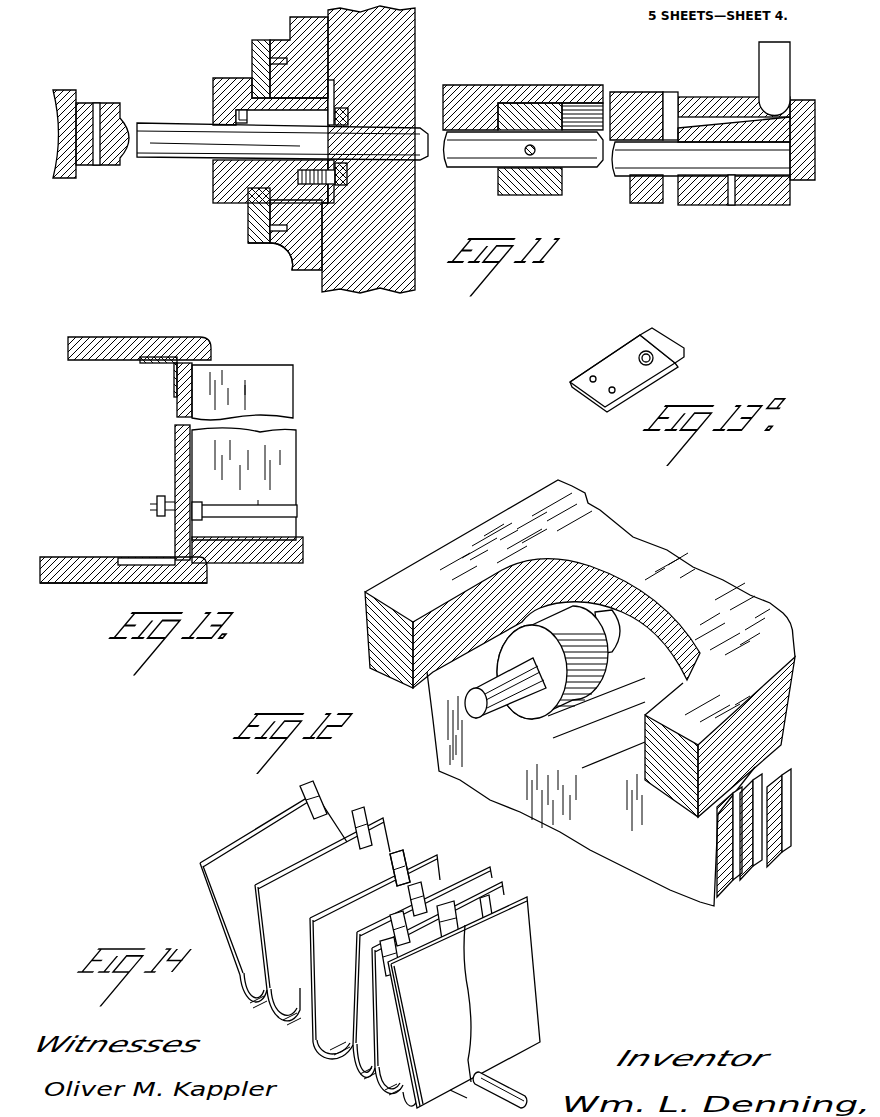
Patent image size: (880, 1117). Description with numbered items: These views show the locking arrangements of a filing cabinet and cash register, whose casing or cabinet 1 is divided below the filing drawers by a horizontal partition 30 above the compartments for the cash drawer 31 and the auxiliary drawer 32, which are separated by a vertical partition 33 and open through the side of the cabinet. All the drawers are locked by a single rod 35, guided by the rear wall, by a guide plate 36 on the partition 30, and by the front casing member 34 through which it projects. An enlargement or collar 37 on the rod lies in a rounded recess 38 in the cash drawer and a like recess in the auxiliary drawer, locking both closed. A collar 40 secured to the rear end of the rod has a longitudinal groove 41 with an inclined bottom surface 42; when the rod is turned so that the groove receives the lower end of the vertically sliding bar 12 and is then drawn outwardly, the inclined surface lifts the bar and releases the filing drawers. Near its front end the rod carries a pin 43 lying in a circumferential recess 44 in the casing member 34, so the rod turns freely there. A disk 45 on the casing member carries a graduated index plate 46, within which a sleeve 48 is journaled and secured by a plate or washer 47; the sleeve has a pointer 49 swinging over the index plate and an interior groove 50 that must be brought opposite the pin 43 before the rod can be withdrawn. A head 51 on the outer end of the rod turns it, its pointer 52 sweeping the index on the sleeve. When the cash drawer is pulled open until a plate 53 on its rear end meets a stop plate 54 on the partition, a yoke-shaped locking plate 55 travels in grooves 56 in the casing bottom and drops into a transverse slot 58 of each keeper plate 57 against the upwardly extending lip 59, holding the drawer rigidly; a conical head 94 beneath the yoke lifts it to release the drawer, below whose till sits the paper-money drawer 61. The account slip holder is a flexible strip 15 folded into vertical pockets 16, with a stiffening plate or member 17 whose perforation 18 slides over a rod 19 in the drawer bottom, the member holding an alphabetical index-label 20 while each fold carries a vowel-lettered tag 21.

In FIG. 13, the casing or cabinet 1 is at (63, 578).
In FIG. 11, the vertically sliding bar 12 is at (766, 62).
In FIG. 14, the strip 15 is at (206, 894).
In FIG. 14, the vertical pockets 16 is at (243, 957).
In FIG. 14, the stiffening plate or member 17 is at (464, 1002).
In FIG. 14, the perforation 18 is at (473, 1075).
In FIG. 14, the rod 19 is at (522, 1097).
In FIG. 14, the alphabetical index-label 20 is at (487, 883).
In FIG. 14, the tag 21 is at (403, 886).
In FIG. 11, the partition 30 is at (482, 87).
In FIG. 13, the partition 30 is at (123, 337).
In FIG. 12, the partition 30 is at (366, 634).
In FIG. 13, the cash drawer 31 is at (279, 561).
In FIG. 12, the cash drawer 31 is at (591, 789).
In FIG. 12, the auxiliary drawer 32 is at (775, 866).
In FIG. 12, the vertical partition 33 is at (636, 717).
In FIG. 11, the casing member 34 is at (383, 275).
In FIG. 11, the rod 35 is at (190, 150).
In FIG. 12, the rod 35 is at (505, 696).
In FIG. 11, the guide plate 36 is at (640, 204).
In FIG. 11, the enlargement or collar 37 is at (540, 195).
In FIG. 12, the enlargement or collar 37 is at (558, 662).
In FIG. 12, the rounded recess 38 is at (545, 722).
In FIG. 11, the collar 40 is at (714, 205).
In FIG. 11, the groove 41 is at (690, 120).
In FIG. 11, the inclined bottom surface 42 is at (730, 128).
In FIG. 11, the pin 43 is at (236, 112).
In FIG. 11, the circumferential recess 44 is at (350, 112).
In FIG. 11, the disk 45 is at (275, 268).
In FIG. 11, the graduated index plate 46 is at (250, 241).
In FIG. 11, the plate or washer 47 is at (300, 203).
In FIG. 11, the sleeve 48 is at (213, 182).
In FIG. 11, the pointer 49 is at (248, 214).
In FIG. 11, the groove 50 is at (258, 108).
In FIG. 11, the head 51 is at (70, 168).
In FIG. 11, the pointer 52 is at (110, 103).
In FIG. 13, the pointer 52 is at (141, 559).
In FIG. 13, the plate 53 is at (177, 382).
In FIG. 13, the stop plate 54 is at (177, 357).
In FIG. 13, the yoke-shaped locking plate 55 is at (175, 469).
In FIG. 13, the grooves 56 is at (78, 557).
In FIG. 13A, the keeper plate 57 is at (635, 378).
In FIG. 13A, the transverse slot 58 is at (640, 338).
In FIG. 13A, the lip 59 is at (666, 350).
In FIG. 13, the drawer 61 is at (293, 531).
In FIG. 13, the conical head 94 is at (157, 500).